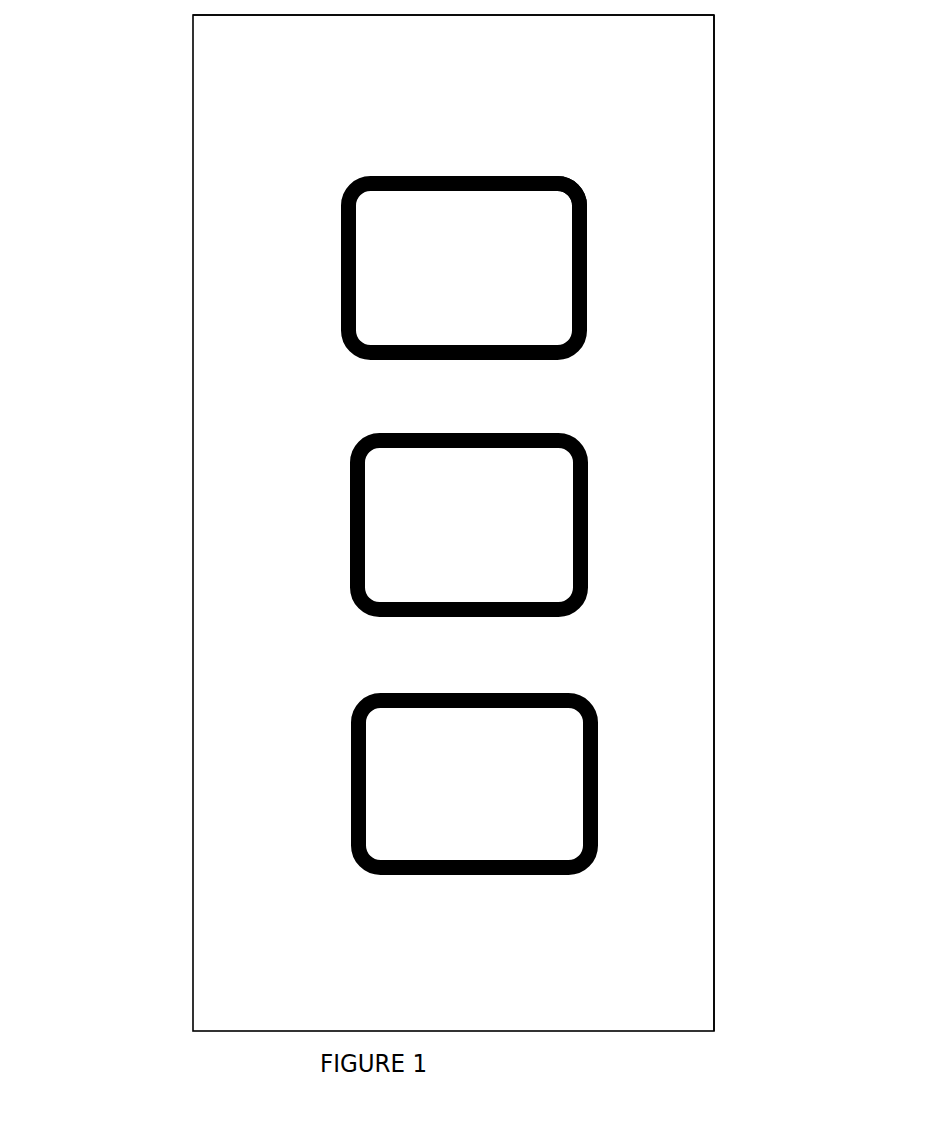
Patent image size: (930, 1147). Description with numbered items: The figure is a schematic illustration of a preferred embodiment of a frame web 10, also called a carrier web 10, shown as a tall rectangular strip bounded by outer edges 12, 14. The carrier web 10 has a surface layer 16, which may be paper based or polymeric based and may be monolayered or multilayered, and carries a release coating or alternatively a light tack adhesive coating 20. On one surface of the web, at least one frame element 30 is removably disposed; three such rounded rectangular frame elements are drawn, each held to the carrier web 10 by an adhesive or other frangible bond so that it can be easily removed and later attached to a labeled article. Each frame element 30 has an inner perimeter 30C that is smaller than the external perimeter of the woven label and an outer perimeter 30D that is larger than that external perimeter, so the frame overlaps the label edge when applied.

The frame web 10 is at (424, 523).
The outer edge 12 is at (173, 468).
The outer edge 14 is at (726, 218).
The surface layer 16 is at (639, 126).
The release coating 20 is at (363, 526).
The frame element 30 is at (407, 275).
The inner perimeter 30C is at (499, 202).
The outer perimeter 30D is at (330, 332).